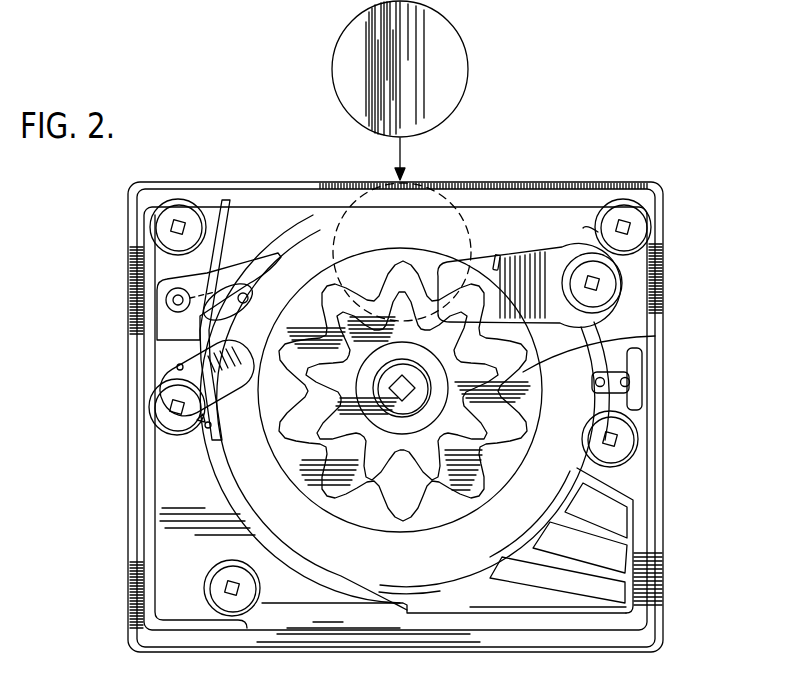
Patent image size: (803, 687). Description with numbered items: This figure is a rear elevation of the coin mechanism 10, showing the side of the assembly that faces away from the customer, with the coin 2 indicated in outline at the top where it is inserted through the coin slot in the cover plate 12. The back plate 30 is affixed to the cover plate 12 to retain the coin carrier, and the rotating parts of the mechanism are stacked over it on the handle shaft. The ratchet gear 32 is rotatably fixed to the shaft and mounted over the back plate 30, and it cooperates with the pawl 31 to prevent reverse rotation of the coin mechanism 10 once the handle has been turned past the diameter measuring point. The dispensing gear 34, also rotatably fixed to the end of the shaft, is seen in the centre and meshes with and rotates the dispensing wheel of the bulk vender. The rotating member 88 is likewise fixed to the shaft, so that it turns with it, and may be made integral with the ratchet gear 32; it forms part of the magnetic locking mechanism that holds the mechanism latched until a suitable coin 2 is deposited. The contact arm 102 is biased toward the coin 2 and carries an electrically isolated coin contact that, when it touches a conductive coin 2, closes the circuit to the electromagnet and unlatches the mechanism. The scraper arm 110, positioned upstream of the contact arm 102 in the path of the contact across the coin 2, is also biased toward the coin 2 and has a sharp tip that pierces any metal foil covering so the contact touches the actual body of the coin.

The coin 2 is at (350, 83).
The coin mechanism 10 is at (702, 206).
The cover plate 12 is at (652, 527).
The back plate 30 is at (167, 532).
The pawl 31 is at (546, 266).
The ratchet gear 32 is at (645, 337).
The dispensing gear 34 is at (377, 470).
The rotating member 88 is at (212, 425).
The contact arm 102 is at (200, 320).
The scraper arm 110 is at (228, 272).